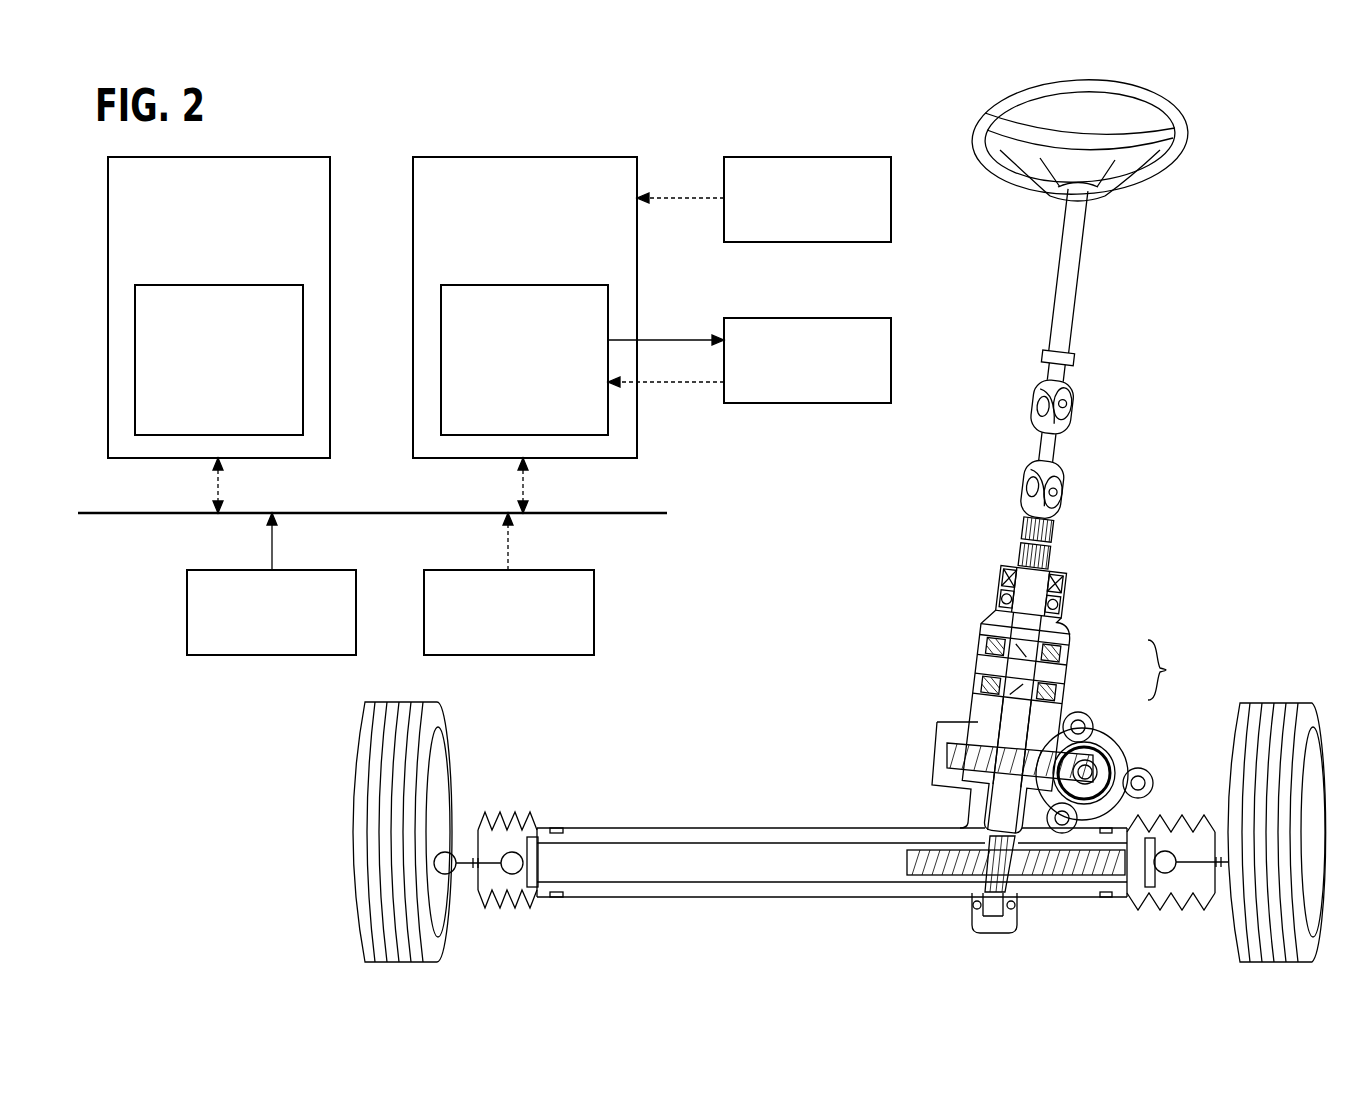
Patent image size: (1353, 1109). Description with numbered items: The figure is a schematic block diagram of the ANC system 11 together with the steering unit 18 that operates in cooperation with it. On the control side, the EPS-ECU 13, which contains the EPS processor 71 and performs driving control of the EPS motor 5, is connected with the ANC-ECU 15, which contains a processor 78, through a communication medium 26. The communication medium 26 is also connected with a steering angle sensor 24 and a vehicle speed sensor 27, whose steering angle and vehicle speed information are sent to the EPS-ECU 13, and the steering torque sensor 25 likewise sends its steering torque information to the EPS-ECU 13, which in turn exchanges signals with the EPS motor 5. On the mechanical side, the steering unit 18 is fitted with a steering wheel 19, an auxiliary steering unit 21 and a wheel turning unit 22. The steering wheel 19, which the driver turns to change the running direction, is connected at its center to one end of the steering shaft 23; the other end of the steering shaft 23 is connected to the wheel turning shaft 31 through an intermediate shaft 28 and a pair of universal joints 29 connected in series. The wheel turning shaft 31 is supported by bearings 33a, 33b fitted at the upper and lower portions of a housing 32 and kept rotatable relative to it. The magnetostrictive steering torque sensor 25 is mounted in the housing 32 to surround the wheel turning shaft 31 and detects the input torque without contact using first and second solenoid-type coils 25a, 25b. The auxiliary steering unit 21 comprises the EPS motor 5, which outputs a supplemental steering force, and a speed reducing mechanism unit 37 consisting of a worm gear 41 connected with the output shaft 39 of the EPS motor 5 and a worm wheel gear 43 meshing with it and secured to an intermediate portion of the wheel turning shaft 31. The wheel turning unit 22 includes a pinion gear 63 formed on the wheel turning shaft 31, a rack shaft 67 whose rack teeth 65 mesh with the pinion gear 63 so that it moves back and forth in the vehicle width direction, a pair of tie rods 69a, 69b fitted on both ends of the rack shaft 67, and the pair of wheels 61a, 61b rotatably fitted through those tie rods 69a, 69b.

The ANC system 11 is at (728, 127).
The EPS-ECU 13 is at (560, 157).
The ANC-ECU 15 is at (302, 157).
The steering unit 18 is at (1250, 112).
The steering wheel 19 is at (1183, 143).
The auxiliary steering unit 21 is at (1203, 591).
The wheel turning unit 22 is at (937, 931).
The steering shaft 23 is at (1067, 266).
The steering angle sensor 24 is at (552, 570).
The steering torque sensor 25 is at (822, 157).
The first coil 25a is at (1056, 655).
The second coil 25b is at (1058, 690).
The communication medium 26 is at (620, 513).
The vehicle speed sensor 27 is at (315, 570).
The intermediate shaft 28 is at (1048, 452).
The universal joints 29 is at (1067, 505).
The wheel turning shaft 31 is at (1012, 722).
The housing 32 is at (993, 613).
The bearing 33a is at (1018, 907).
The bearing 33b is at (1065, 605).
The speed reducing mechanism unit 37 is at (898, 764).
The output shaft 39 is at (1092, 772).
The worm gear 41 is at (1092, 772).
The worm wheel gear 43 is at (940, 755).
The EPS motor 5 is at (824, 318).
The wheel 61a is at (1268, 716).
The wheel 61b is at (448, 716).
The pinion gear 63 is at (985, 868).
The rack teeth 65 is at (927, 862).
The rack shaft 67 is at (833, 877).
The tie rod 69a is at (1190, 868).
The tie rod 69b is at (480, 890).
The EPS processor 71 is at (576, 285).
The processor 78 is at (268, 285).